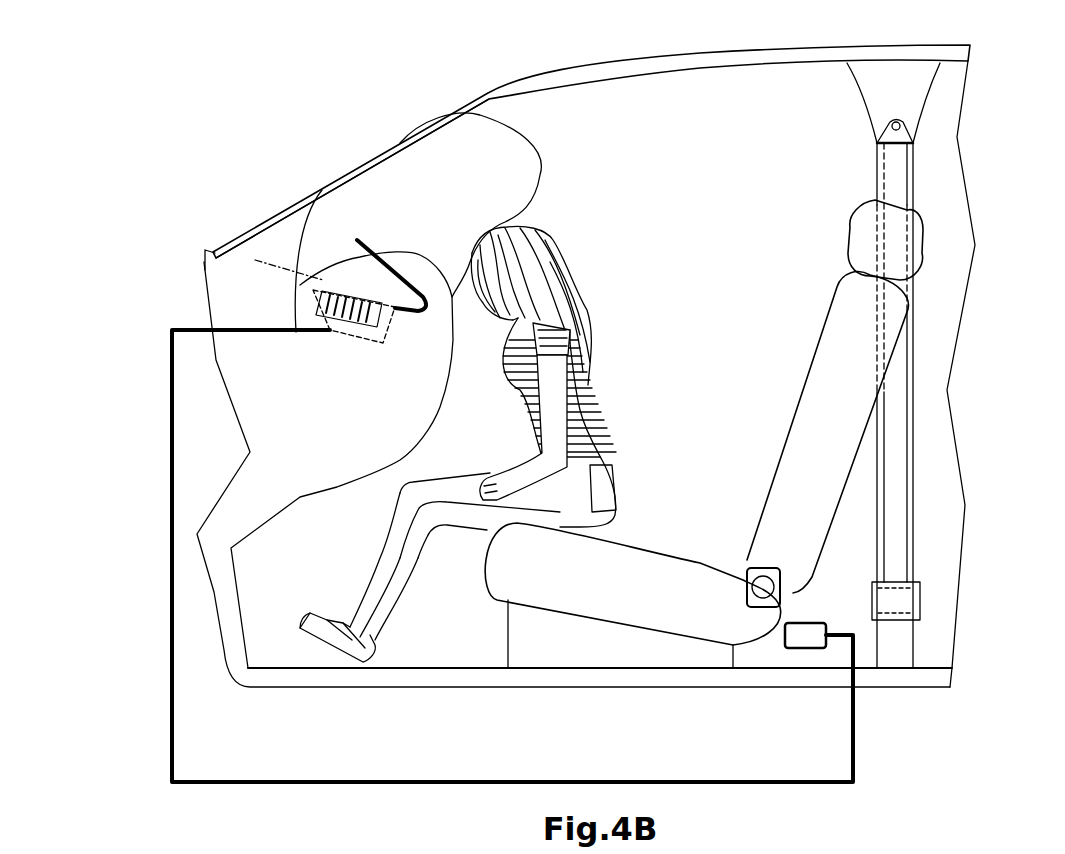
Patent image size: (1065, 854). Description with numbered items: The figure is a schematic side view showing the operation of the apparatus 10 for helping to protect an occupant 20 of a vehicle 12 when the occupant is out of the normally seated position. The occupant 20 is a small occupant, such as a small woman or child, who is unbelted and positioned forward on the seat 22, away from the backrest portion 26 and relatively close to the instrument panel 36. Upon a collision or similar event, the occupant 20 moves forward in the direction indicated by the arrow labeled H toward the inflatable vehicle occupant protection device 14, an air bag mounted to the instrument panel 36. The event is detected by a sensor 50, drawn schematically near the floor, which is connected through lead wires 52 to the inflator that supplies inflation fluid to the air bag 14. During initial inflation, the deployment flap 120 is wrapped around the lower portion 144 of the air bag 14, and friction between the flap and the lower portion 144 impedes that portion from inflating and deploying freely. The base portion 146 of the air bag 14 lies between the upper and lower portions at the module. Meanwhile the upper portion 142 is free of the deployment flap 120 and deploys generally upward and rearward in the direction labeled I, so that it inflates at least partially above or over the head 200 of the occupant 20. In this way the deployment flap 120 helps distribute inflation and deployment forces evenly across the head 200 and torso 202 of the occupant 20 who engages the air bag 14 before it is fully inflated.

The apparatus 10 is at (250, 193).
The vehicle 12 is at (255, 133).
The inflatable vehicle occupant protection device 14 is at (410, 168).
The occupant 20 is at (508, 401).
The seat 22 is at (749, 394).
The backrest portion 26 is at (832, 433).
The instrument panel 36 is at (380, 430).
The sensor 50 is at (803, 650).
The lead wires 52 is at (297, 778).
The deployment flap 120 is at (329, 351).
The upper portion 142 is at (463, 153).
The lower portion 144 is at (325, 280).
The base portion 146 is at (310, 322).
The head 200 is at (527, 250).
The torso 202 is at (573, 405).